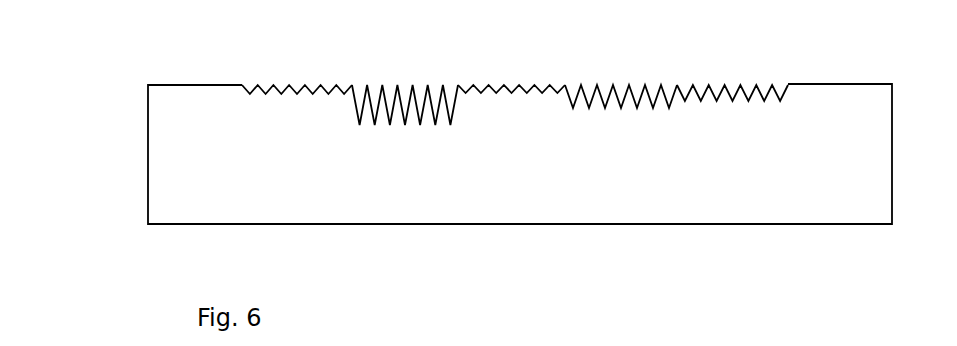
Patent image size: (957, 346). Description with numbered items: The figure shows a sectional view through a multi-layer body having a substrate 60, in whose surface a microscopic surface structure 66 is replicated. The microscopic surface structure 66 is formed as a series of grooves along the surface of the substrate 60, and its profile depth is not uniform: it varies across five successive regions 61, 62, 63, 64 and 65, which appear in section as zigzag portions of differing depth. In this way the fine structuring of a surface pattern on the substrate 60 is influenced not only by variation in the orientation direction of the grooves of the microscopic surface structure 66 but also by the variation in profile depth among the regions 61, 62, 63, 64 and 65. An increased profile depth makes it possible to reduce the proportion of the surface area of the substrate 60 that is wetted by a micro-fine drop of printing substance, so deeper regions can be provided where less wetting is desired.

The substrate 60 is at (148, 165).
The region 61 is at (290, 78).
The region 62 is at (417, 85).
The region 63 is at (517, 77).
The region 64 is at (621, 85).
The region 65 is at (729, 77).
The microscopic surface structure 66 is at (529, 175).